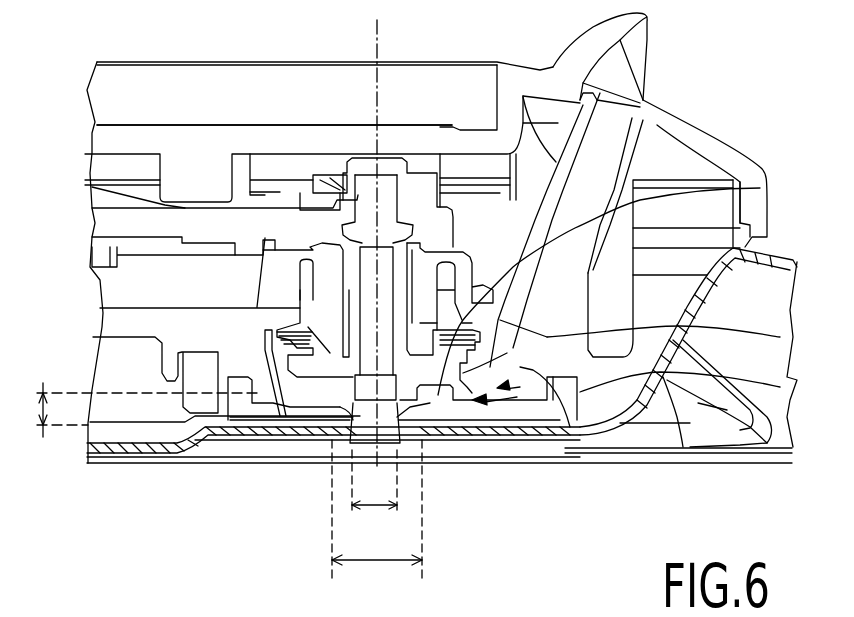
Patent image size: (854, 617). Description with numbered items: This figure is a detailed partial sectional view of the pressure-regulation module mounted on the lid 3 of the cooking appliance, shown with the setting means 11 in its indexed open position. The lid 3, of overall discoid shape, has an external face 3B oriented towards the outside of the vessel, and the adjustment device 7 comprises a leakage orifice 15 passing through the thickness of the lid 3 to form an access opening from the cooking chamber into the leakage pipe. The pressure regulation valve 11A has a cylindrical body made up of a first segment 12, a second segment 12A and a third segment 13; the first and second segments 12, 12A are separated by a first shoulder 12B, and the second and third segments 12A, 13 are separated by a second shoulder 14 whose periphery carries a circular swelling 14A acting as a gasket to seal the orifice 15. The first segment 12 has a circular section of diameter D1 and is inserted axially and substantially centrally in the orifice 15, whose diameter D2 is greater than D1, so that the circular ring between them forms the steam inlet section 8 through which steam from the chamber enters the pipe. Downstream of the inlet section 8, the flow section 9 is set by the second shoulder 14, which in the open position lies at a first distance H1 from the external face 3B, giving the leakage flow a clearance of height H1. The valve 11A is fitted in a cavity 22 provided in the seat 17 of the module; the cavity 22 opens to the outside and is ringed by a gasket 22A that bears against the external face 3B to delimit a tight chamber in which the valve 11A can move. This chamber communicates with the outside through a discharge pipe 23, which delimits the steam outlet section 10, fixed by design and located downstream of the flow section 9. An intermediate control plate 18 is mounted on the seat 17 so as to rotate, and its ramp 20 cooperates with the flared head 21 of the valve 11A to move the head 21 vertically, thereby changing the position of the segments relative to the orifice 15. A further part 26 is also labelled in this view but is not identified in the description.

The lid 3 is at (173, 450).
The external face 3B is at (278, 415).
The adjustment device 7 is at (520, 400).
The steam inlet section 8 is at (343, 432).
The flow section 9 is at (488, 410).
The steam outlet section 10 is at (608, 145).
The setting means 11 is at (397, 213).
The pressure regulation valve 11A is at (347, 387).
The first segment 12 is at (398, 428).
The second segment 12A is at (760, 188).
The first shoulder 12B is at (403, 432).
The third segment 13 is at (780, 337).
The second shoulder 14 is at (450, 410).
The circular swelling 14A is at (438, 393).
The leakage orifice 15 is at (327, 432).
The seat 17 is at (780, 387).
The intermediate control plate 18 is at (300, 225).
The ramp 20 is at (327, 183).
The flared head 21 is at (383, 242).
The cavity 22 is at (560, 403).
The gasket 22A is at (227, 420).
The discharge pipe 23 is at (597, 172).
The fin 26 is at (573, 58).
The first distance H1 is at (133, 410).
The diameter of first segment D1 is at (374, 494).
The diameter of leakage orifice D2 is at (377, 518).